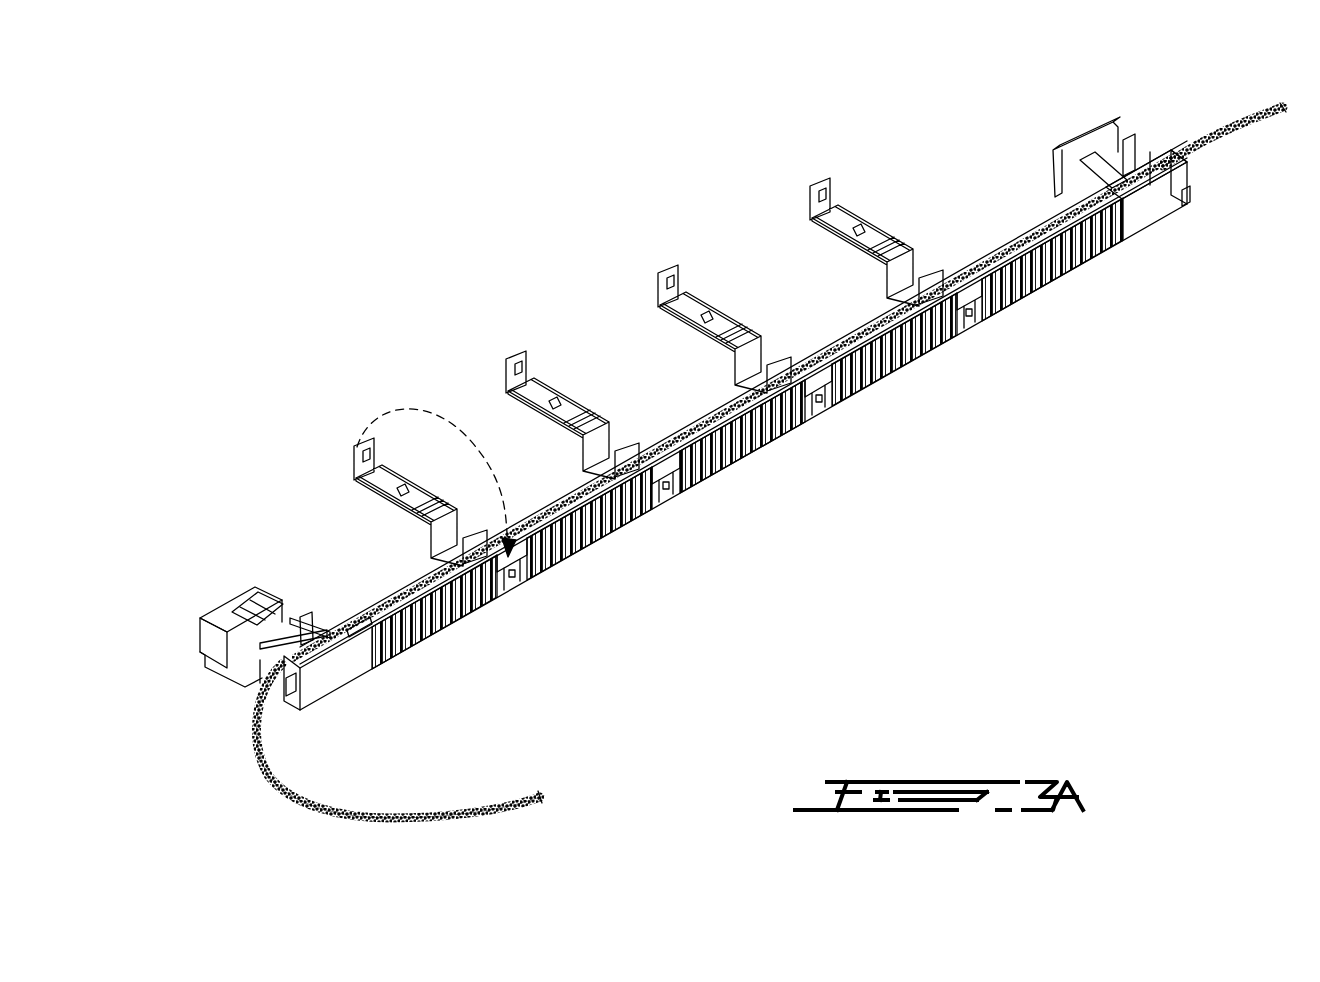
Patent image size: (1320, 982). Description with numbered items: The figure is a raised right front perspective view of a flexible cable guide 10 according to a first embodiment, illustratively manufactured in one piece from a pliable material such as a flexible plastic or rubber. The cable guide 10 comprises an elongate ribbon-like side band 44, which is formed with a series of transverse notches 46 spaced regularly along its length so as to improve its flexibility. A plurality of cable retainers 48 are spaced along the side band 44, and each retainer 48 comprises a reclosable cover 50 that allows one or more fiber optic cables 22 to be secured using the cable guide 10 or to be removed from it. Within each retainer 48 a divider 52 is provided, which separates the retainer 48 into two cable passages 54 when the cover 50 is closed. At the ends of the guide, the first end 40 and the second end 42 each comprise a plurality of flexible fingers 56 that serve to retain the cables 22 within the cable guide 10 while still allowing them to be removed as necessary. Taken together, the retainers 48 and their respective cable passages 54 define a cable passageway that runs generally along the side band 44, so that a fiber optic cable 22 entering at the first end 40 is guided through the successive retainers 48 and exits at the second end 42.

The flexible cable guide 10 is at (365, 262).
The fiber optic cable 22 is at (437, 806).
The first end 40 is at (260, 687).
The second end 42 is at (1190, 170).
The side band 44 is at (613, 535).
The transverse notches 46 is at (730, 452).
The cable retainers 48 is at (510, 470).
The reclosable cover 50 is at (813, 213).
The divider 52 is at (635, 440).
The cable passages 54 is at (982, 293).
The flexible fingers 56 is at (300, 620).